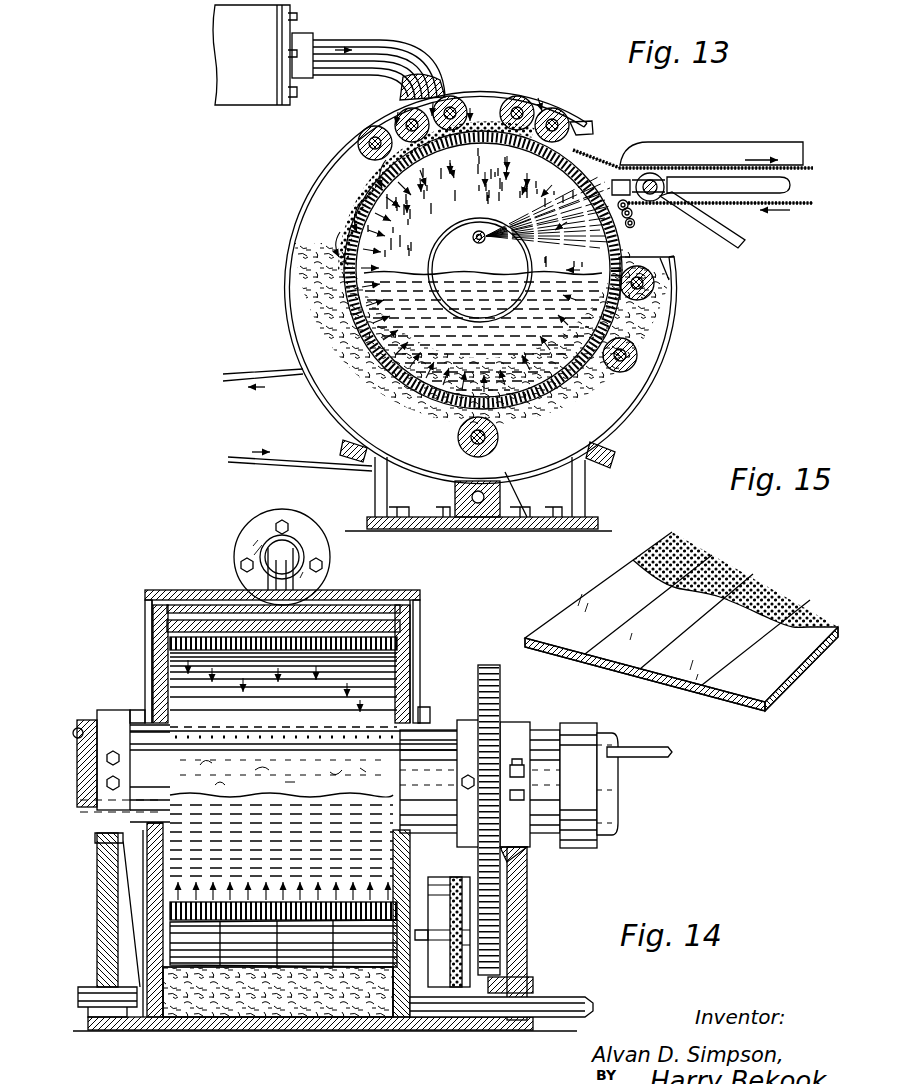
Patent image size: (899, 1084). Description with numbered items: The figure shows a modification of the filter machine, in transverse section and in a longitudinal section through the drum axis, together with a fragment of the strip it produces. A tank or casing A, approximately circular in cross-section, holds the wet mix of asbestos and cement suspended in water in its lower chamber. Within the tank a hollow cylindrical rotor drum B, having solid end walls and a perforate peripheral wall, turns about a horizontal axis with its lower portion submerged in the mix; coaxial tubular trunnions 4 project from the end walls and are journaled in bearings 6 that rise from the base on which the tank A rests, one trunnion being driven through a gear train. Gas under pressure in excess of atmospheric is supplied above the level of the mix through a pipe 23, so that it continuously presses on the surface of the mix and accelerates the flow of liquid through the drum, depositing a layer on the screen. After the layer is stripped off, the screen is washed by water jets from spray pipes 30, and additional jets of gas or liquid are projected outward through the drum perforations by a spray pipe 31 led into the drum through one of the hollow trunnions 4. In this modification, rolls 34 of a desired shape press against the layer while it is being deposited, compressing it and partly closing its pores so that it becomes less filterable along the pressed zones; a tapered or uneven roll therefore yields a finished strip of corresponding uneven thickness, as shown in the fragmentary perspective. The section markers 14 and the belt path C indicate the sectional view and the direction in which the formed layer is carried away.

In FIG. 13, the pipe 23 is at (380, 32).
In FIG. 13, the section line 14- 14 is at (449, 78).
In FIG. 13, the spray pipe 31 is at (483, 206).
In FIG. 14, the spray pipe 31 is at (330, 720).
In FIG. 13, the spray pipes 30 is at (637, 221).
In FIG. 13, the rolls 34 is at (640, 355).
In FIG. 14, the rolls 34 is at (312, 960).
In FIG. 14, the tubular trunnions 4 is at (543, 737).
In FIG. 14, the bearings 6 is at (527, 893).
In FIG. 13, the tank or casing A is at (283, 275).
In FIG. 14, the tank or casing A is at (181, 589).
In FIG. 13, the rotor drum B is at (358, 241).
In FIG. 14, the rotor drum B is at (160, 668).
In FIG. 13, the conveyor belt C is at (779, 209).